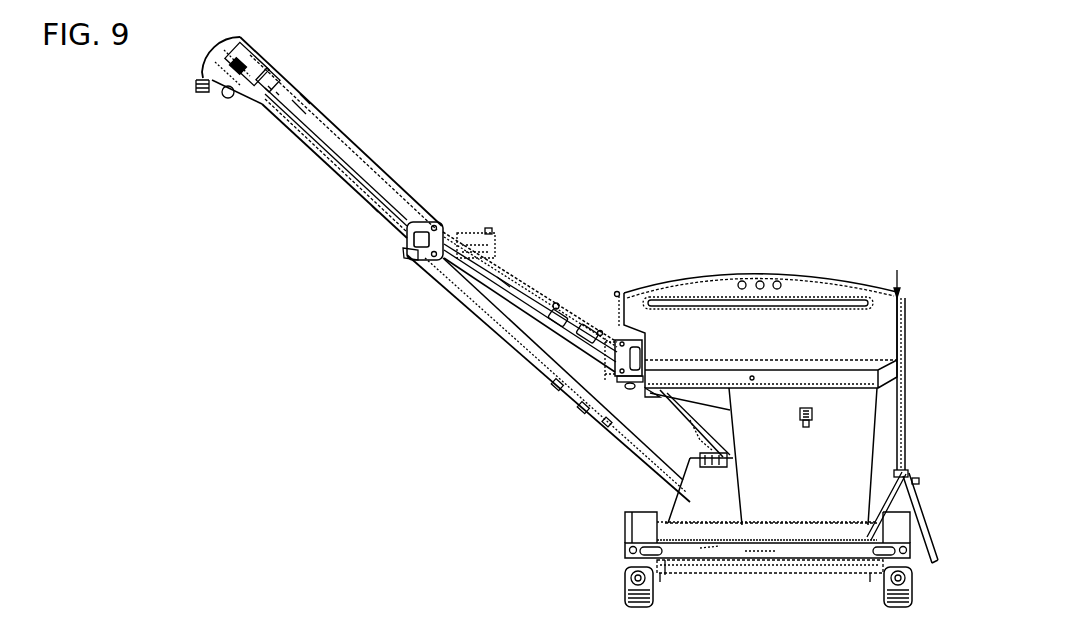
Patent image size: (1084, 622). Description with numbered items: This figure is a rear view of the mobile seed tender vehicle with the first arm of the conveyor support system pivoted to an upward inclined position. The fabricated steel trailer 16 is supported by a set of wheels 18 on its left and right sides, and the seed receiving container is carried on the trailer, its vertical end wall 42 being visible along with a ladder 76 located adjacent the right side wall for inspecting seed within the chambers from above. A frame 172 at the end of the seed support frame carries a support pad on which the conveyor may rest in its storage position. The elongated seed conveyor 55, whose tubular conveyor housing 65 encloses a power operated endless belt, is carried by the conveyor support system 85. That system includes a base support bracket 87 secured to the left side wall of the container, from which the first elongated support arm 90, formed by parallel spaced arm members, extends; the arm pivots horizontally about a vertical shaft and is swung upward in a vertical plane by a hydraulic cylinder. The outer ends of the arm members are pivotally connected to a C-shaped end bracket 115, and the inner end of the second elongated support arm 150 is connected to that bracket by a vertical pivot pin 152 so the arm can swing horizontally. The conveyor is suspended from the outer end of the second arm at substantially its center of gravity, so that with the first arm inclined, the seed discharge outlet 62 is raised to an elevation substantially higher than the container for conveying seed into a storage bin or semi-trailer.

The seed discharge outlet 62 is at (217, 83).
The seed conveyor 55 is at (378, 138).
The tubular conveyor housing 65 is at (330, 143).
The C-shaped end bracket 115 is at (433, 240).
The vertical pivot pin 152 is at (410, 257).
The second elongated support arm 150 is at (472, 236).
The conveyor support system 85 is at (546, 263).
The first elongated support arm 90 is at (612, 288).
The base support bracket 87 is at (637, 357).
The vertical end wall 42 is at (797, 323).
The ladder 76 is at (902, 430).
The frame 172 is at (720, 488).
The trailer 16 is at (696, 565).
The wheels 18 is at (627, 597).